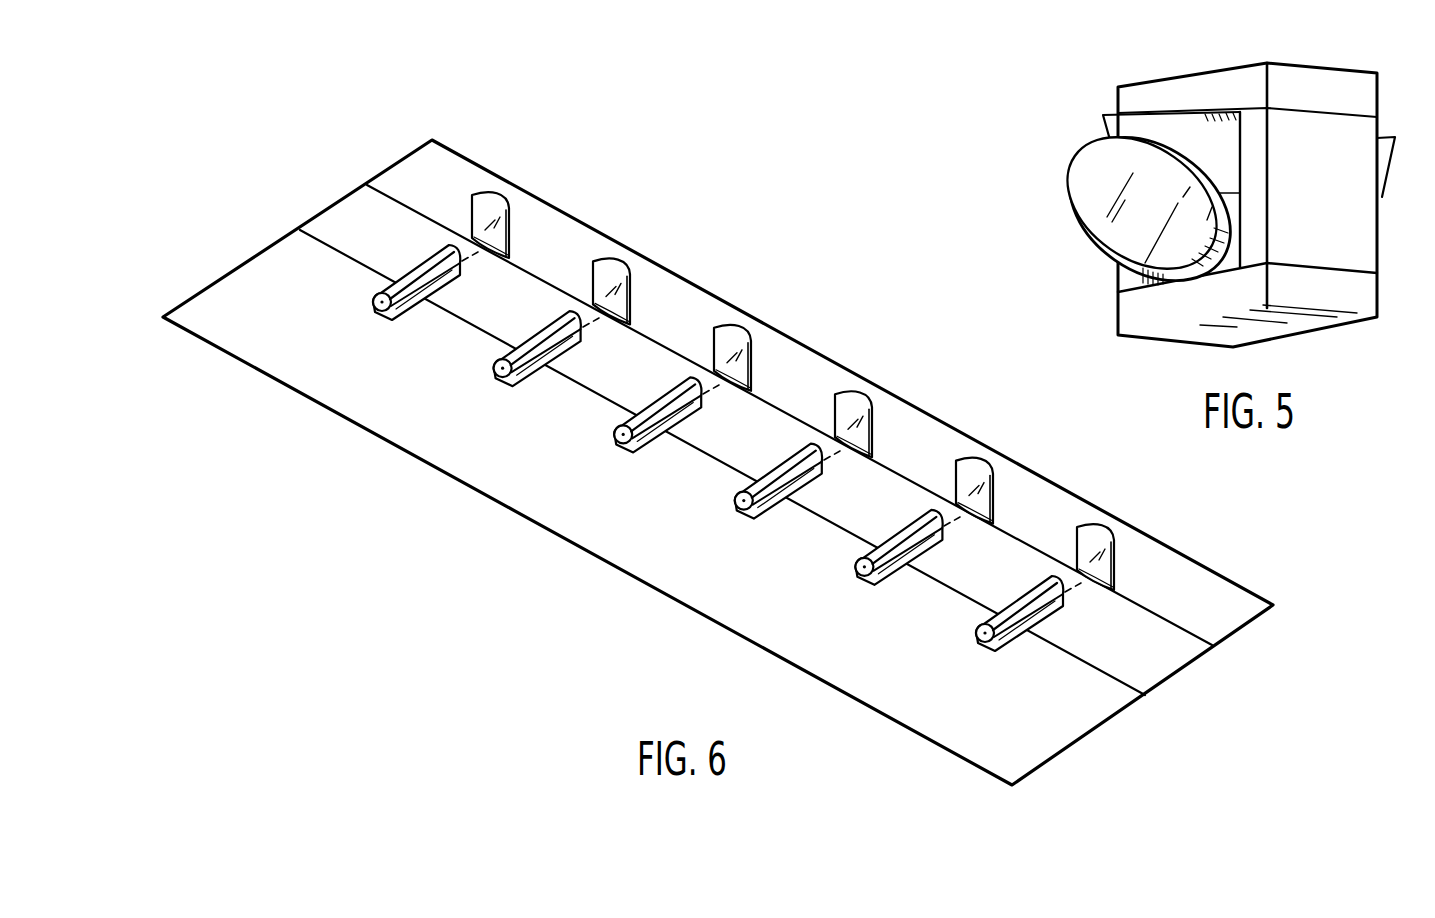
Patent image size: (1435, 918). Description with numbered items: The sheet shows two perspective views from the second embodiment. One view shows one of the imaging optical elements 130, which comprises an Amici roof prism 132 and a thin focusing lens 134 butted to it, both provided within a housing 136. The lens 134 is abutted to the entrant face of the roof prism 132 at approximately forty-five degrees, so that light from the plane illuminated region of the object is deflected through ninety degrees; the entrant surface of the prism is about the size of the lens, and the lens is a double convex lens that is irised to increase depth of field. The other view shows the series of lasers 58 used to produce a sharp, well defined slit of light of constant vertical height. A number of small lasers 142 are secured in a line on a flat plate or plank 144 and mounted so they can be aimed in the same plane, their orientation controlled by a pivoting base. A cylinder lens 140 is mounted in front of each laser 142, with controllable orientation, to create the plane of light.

In FIG. 6, the series of lasers 58 is at (393, 446).
In FIG. 6, the cylinder lens 140 is at (463, 200).
In FIG. 6, the small laser 142 is at (398, 258).
In FIG. 6, the flat plate 144 is at (393, 397).
In FIG. 5, the imaging optical element 130 is at (1201, 197).
In FIG. 5, the Amici roof prism 132 is at (1103, 127).
In FIG. 5, the thin focusing lens 134 is at (1087, 220).
In FIG. 5, the housing 136 is at (1370, 250).